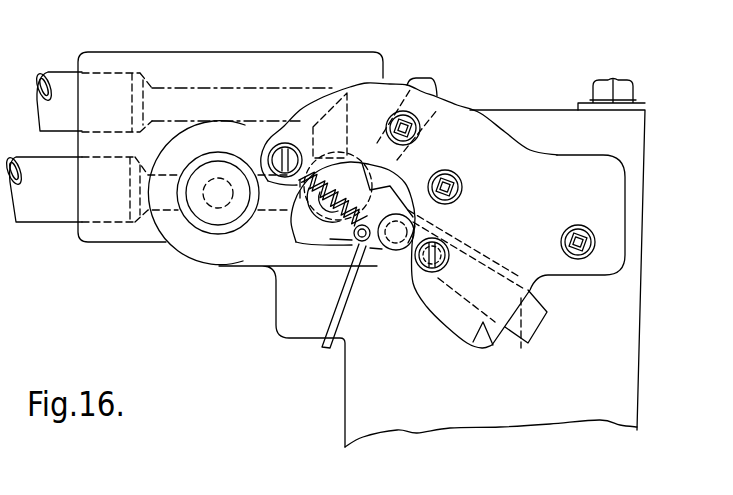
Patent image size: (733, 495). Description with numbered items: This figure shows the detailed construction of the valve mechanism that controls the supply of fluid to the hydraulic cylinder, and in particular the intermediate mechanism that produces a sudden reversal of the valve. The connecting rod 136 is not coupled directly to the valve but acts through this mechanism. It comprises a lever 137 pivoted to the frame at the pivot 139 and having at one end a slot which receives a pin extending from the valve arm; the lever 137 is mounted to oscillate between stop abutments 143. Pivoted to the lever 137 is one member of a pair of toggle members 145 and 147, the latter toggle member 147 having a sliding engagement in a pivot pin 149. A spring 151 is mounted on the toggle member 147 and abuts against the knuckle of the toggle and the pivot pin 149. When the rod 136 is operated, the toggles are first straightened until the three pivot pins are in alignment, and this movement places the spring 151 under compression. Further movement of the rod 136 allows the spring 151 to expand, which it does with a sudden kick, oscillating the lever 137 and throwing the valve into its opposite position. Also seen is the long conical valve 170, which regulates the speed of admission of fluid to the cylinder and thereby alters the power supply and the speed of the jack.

The connecting rod 136 is at (325, 345).
The lever 137 is at (395, 258).
The pivot 139 is at (432, 273).
The stop abutments 143 is at (495, 322).
The toggle member 145 is at (378, 230).
The toggle member 147 is at (310, 195).
The pivot pin 149 is at (292, 150).
The spring 151 is at (348, 190).
The conical valve 170 is at (218, 193).